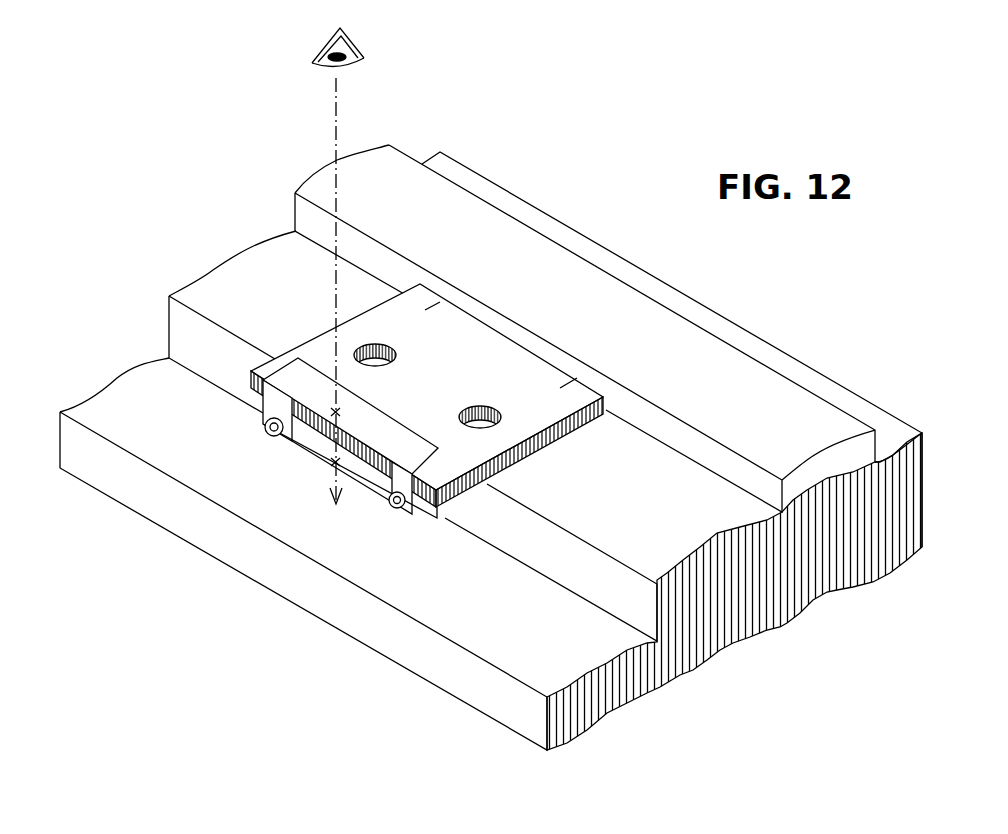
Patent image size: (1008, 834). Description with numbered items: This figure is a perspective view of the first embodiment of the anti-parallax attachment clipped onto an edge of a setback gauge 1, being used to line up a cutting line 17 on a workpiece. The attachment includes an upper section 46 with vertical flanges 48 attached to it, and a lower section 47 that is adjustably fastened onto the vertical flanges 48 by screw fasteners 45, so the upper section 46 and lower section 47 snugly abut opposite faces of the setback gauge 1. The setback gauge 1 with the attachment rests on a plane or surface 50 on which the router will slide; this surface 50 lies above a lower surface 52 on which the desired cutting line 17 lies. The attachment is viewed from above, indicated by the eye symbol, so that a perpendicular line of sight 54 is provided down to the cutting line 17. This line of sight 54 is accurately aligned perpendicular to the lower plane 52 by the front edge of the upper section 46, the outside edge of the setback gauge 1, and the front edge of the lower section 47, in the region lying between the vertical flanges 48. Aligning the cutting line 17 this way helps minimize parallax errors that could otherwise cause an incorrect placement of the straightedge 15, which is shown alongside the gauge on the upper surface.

The setback gauge 1 is at (512, 363).
The straightedge 15 is at (500, 233).
The cutting line 17 is at (491, 447).
The screw fasteners 45 is at (394, 506).
The upper section 46 is at (382, 413).
The lower section 47 is at (320, 446).
The vertical flanges 48 is at (273, 406).
The plane or surface 50 is at (648, 511).
The lower surface 52 is at (517, 645).
The perpendicular line of sight 54 is at (334, 113).